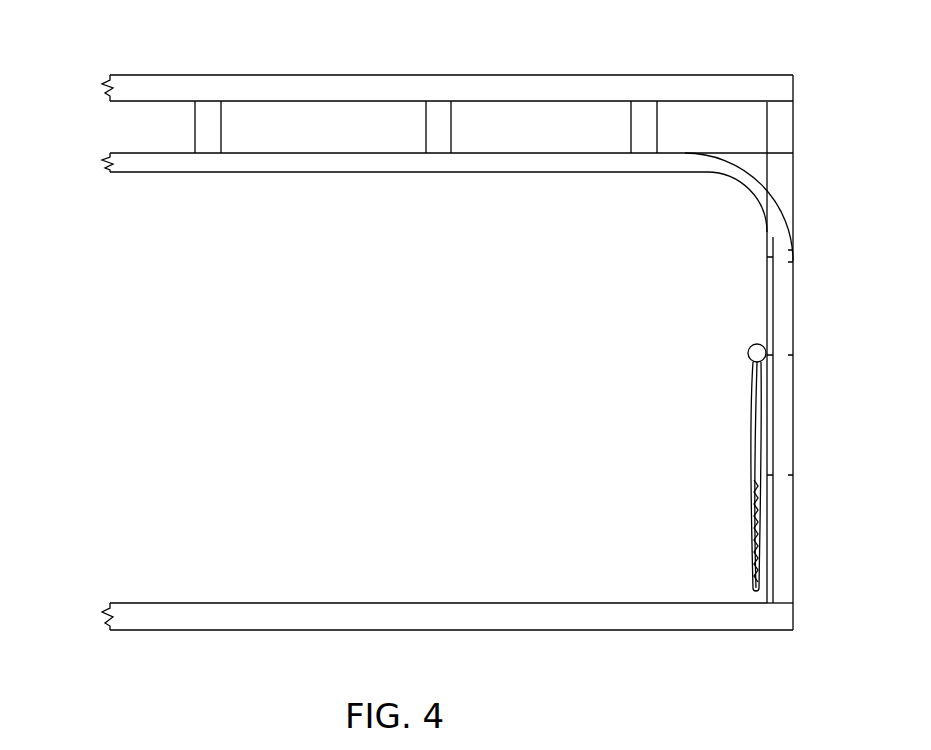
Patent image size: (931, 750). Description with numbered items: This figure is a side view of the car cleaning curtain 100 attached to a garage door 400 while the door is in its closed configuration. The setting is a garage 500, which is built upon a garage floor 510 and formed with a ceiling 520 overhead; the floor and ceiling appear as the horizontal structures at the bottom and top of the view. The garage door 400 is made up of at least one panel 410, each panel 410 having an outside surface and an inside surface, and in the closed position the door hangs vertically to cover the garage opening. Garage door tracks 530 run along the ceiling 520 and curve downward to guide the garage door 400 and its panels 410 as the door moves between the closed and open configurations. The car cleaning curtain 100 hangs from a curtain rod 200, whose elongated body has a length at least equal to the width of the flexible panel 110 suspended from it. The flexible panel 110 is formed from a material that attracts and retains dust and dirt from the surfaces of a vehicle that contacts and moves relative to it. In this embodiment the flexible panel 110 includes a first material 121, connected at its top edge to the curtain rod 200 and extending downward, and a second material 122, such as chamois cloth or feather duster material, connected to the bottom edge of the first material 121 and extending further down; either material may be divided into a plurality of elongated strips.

The garage 500 is at (88, 193).
The ceiling 520 is at (400, 79).
The garage door tracks 530 is at (735, 197).
The garage door 400 is at (795, 220).
The panel 410 is at (780, 173).
The garage floor 510 is at (362, 605).
The curtain rod 200 is at (752, 342).
The car cleaning curtain 100 is at (702, 476).
The first material 121 is at (752, 432).
The flexible panel 110 is at (752, 485).
The second material 122 is at (752, 540).